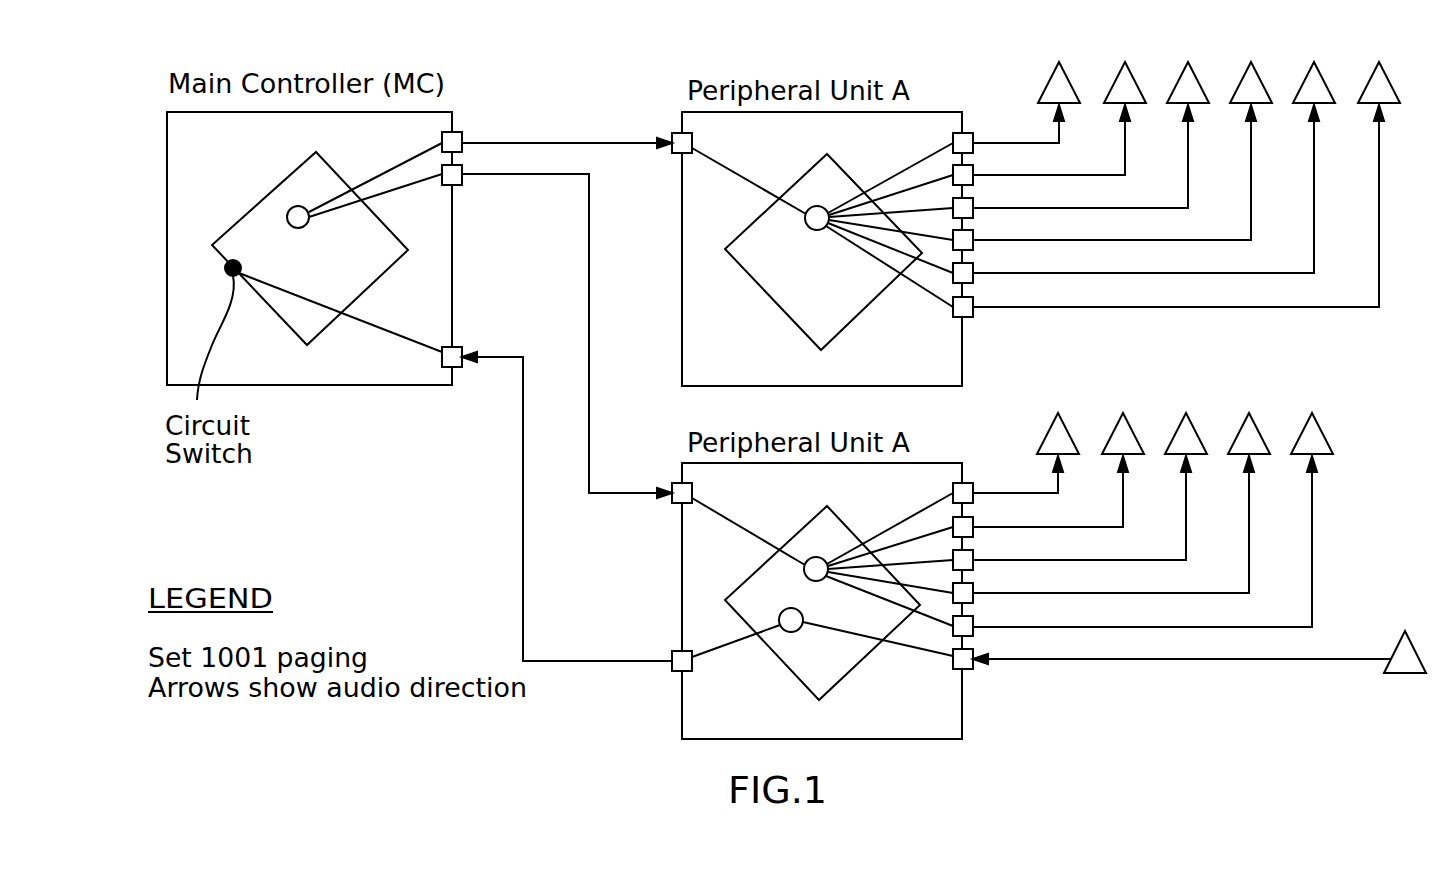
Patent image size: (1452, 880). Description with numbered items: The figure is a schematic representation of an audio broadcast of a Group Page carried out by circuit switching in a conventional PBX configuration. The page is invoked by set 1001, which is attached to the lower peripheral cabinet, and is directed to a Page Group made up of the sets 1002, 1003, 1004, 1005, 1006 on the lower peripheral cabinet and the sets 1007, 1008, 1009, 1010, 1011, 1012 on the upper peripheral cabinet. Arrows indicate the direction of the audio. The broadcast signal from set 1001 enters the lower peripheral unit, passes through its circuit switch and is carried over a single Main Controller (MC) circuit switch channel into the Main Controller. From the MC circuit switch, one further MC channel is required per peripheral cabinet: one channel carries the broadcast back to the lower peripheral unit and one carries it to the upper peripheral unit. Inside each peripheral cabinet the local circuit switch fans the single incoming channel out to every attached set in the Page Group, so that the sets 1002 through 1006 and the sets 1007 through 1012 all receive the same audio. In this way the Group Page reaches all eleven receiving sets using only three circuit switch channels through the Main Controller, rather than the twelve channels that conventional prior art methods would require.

The set 1001 is at (1383, 631).
The set 1002 is at (1036, 413).
The set 1003 is at (1101, 413).
The set 1004 is at (1164, 413).
The set 1005 is at (1227, 413).
The set 1006 is at (1290, 413).
The set 1007 is at (1037, 62).
The set 1008 is at (1103, 62).
The set 1009 is at (1166, 62).
The set 1010 is at (1229, 62).
The set 1011 is at (1292, 62).
The set 1012 is at (1357, 62).